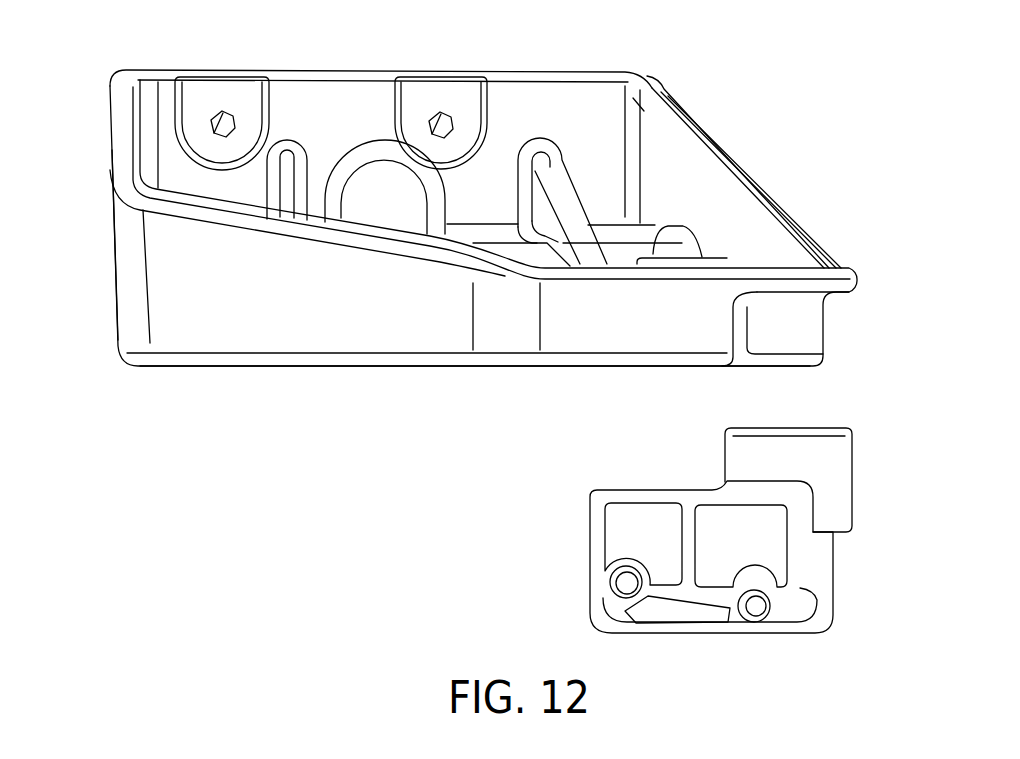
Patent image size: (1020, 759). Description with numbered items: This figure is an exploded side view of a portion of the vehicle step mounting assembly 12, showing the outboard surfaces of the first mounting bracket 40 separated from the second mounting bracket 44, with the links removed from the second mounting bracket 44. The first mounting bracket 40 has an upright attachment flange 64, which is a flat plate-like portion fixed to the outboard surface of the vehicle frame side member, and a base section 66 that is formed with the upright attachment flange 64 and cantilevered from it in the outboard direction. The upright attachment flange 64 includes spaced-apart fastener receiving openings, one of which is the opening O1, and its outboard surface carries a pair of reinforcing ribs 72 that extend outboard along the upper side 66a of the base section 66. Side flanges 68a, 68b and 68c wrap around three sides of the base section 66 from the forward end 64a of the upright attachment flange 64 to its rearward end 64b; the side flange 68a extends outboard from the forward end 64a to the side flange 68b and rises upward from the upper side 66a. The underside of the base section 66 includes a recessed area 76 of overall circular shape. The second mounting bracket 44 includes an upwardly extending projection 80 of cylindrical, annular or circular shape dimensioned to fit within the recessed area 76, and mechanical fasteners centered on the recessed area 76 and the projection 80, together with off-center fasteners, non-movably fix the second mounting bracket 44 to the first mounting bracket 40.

The vehicle step mounting assembly 12 is at (912, 104).
The first mounting bracket 40 is at (730, 143).
The second mounting bracket 44 is at (860, 463).
The upright attachment flange 64 is at (538, 105).
The forward end 64a is at (147, 102).
The rearward end 64b is at (650, 81).
The base section 66 is at (493, 233).
The upper side 66a is at (653, 252).
The side flange 68a is at (128, 142).
The side flange 68b is at (310, 307).
The side flange 68c is at (767, 207).
The reinforcing ribs 72 is at (293, 177).
The recessed area 76 is at (797, 300).
The upwardly extending projection 80 is at (743, 453).
The fastener receiving opening O1 is at (460, 57).